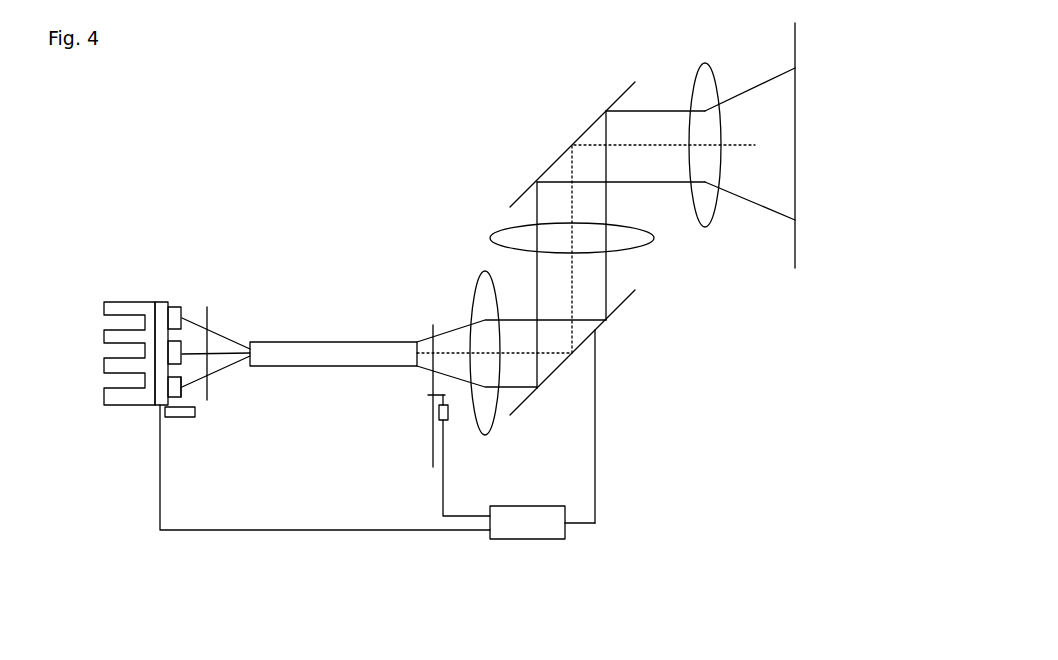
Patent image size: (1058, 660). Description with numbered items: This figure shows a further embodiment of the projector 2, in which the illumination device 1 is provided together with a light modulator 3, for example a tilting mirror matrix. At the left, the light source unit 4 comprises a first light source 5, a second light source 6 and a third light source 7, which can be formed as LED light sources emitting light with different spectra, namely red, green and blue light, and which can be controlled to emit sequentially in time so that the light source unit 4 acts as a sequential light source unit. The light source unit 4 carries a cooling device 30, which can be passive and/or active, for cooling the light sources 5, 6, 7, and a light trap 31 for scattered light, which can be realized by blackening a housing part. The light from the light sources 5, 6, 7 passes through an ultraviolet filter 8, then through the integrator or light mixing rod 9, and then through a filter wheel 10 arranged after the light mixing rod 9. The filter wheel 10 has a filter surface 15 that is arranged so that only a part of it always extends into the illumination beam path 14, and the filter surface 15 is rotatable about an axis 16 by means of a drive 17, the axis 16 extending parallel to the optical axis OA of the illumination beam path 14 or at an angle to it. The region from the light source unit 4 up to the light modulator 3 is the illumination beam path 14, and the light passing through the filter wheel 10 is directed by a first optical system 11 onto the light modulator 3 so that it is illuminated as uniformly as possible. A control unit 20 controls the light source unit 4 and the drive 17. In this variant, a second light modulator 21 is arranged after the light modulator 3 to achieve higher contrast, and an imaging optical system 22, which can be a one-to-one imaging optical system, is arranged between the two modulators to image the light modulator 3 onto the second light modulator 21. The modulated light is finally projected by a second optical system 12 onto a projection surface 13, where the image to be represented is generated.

The illumination device 1 is at (320, 340).
The projector 2 is at (636, 296).
The light modulator 3 is at (622, 307).
The light source unit 4 is at (158, 393).
The first light source 5 is at (183, 312).
The second light source 6 is at (172, 370).
The third light source 7 is at (183, 398).
The ultraviolet filter 8 is at (208, 313).
The light mixing rod 9 is at (340, 367).
The filter wheel 10 is at (430, 452).
The first optical system 11 is at (487, 433).
The second optical system 12 is at (707, 227).
The projection surface 13 is at (795, 258).
The illumination beam path 14 is at (220, 345).
The filter surface 15 is at (432, 428).
The axis 16 is at (445, 395).
The drive 17 is at (448, 415).
The control unit 20 is at (517, 540).
The second light modulator 21 is at (515, 193).
The imaging optical system 22 is at (490, 233).
The cooling device 30 is at (115, 400).
The light trap 31 is at (170, 418).
The optical axis OA is at (425, 350).